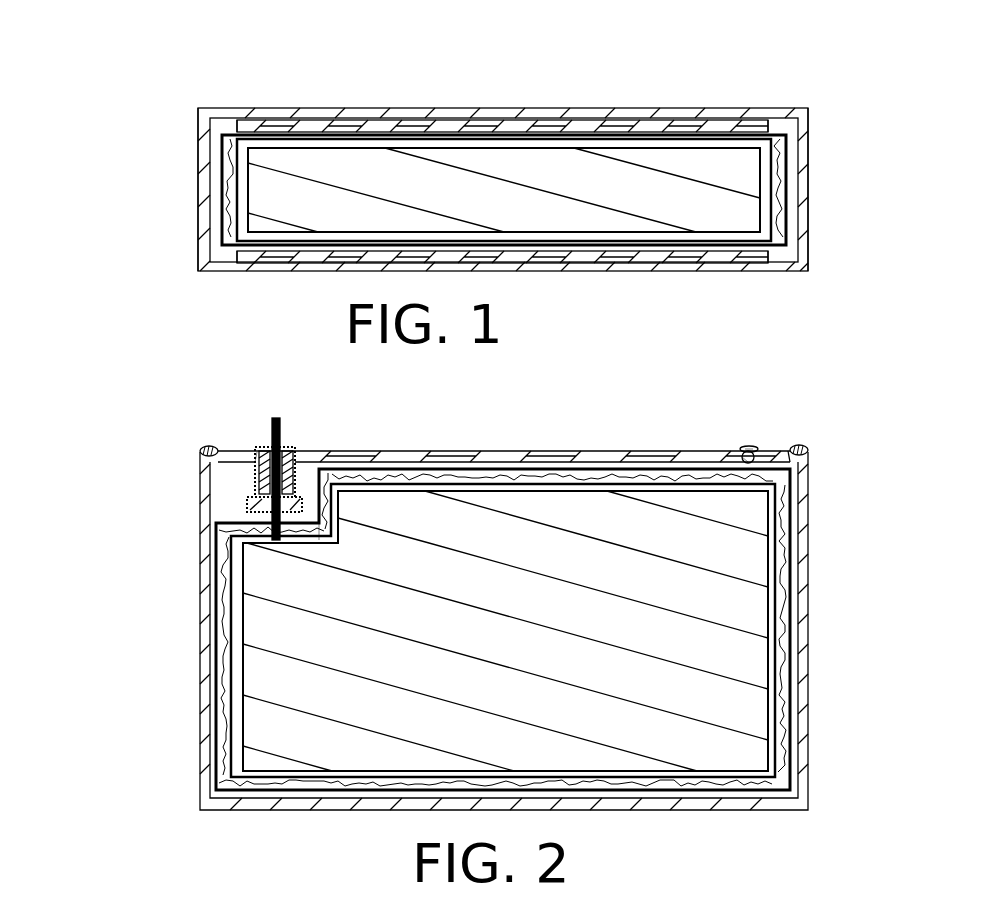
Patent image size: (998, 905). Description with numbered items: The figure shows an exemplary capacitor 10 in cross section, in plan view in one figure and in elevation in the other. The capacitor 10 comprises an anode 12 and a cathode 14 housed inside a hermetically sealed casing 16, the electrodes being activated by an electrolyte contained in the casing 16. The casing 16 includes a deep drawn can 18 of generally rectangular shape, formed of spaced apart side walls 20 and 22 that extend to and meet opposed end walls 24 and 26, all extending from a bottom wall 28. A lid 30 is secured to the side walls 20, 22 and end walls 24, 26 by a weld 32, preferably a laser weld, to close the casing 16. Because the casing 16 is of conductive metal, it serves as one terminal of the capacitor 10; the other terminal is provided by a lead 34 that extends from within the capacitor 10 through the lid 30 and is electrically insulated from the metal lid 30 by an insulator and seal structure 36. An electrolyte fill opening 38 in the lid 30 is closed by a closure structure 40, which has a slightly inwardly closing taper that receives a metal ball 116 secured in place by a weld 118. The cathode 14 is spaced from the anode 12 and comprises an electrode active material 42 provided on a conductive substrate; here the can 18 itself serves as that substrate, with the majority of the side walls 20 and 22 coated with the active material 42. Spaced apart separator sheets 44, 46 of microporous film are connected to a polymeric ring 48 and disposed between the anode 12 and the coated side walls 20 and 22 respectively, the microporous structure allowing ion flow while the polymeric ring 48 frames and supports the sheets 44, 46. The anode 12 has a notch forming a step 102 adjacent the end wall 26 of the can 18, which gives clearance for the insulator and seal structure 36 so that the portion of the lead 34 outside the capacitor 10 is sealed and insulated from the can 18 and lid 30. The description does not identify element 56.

In FIG. 2, the capacitor 10 is at (867, 466).
In FIG. 1, the anode 12 is at (787, 186).
In FIG. 2, the anode 12 is at (758, 488).
In FIG. 1, the cathode 14 is at (403, 152).
In FIG. 2, the cathode 14 is at (505, 631).
In FIG. 1, the casing 16 is at (810, 110).
In FIG. 2, the casing 16 is at (534, 654).
In FIG. 2, the deep drawn can 18 is at (872, 619).
In FIG. 1, the side wall 20 is at (546, 119).
In FIG. 1, the side wall 22 is at (692, 266).
In FIG. 1, the end wall 24 is at (810, 244).
In FIG. 2, the end wall 24 is at (809, 620).
In FIG. 1, the end wall 26 is at (196, 216).
In FIG. 2, the end wall 26 is at (200, 681).
In FIG. 2, the bottom wall 28 is at (756, 806).
In FIG. 2, the lid 30 is at (427, 450).
In FIG. 2, the weld 32 is at (812, 446).
In FIG. 2, the lead 34 is at (273, 425).
In FIG. 2, the insulator and seal structure 36 is at (305, 470).
In FIG. 2, the electrolyte fill opening 38 is at (722, 490).
In FIG. 2, the closure structure 40 is at (776, 430).
In FIG. 1, the electrode active material 42 is at (279, 124).
In FIG. 1, the separator sheet 44 is at (737, 117).
In FIG. 1, the separator sheet 46 is at (764, 246).
In FIG. 1, the polymeric ring 48 is at (790, 152).
In FIG. 2, the polymeric ring 48 is at (786, 670).
In FIG. 2, the lead 56 is at (257, 452).
In FIG. 2, the step 102 is at (318, 547).
In FIG. 2, the metal ball 116 is at (750, 447).
In FIG. 2, the weld 118 is at (744, 456).